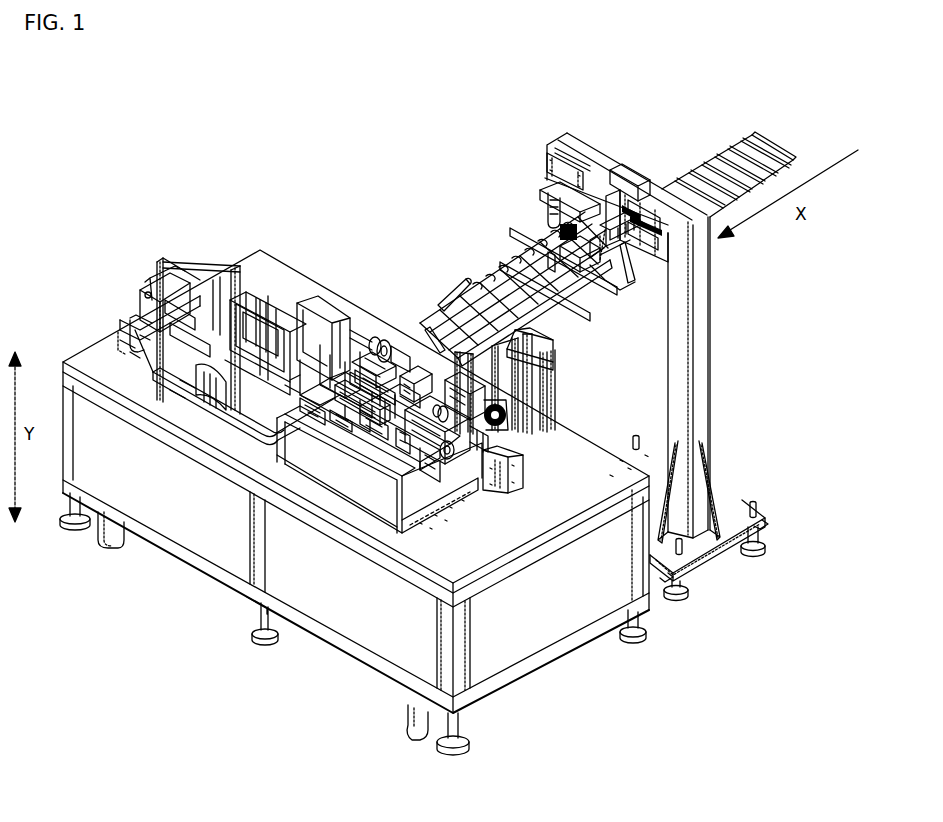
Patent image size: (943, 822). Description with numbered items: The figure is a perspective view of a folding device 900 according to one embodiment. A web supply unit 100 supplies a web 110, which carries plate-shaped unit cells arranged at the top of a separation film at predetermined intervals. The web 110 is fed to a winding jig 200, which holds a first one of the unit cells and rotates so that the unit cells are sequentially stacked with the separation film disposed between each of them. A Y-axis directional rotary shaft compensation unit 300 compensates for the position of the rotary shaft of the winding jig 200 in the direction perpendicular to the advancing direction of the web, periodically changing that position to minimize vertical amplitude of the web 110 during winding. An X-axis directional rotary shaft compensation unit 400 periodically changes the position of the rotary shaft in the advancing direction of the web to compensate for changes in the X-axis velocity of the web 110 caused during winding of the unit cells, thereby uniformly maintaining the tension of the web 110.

The folding device 900 is at (83, 163).
The web supply unit 100 is at (492, 251).
The web 110 is at (679, 170).
The winding jig 200 is at (343, 307).
The Y-axis directional rotary shaft compensation unit 300 is at (231, 435).
The X-axis directional rotary shaft compensation unit 400 is at (497, 496).